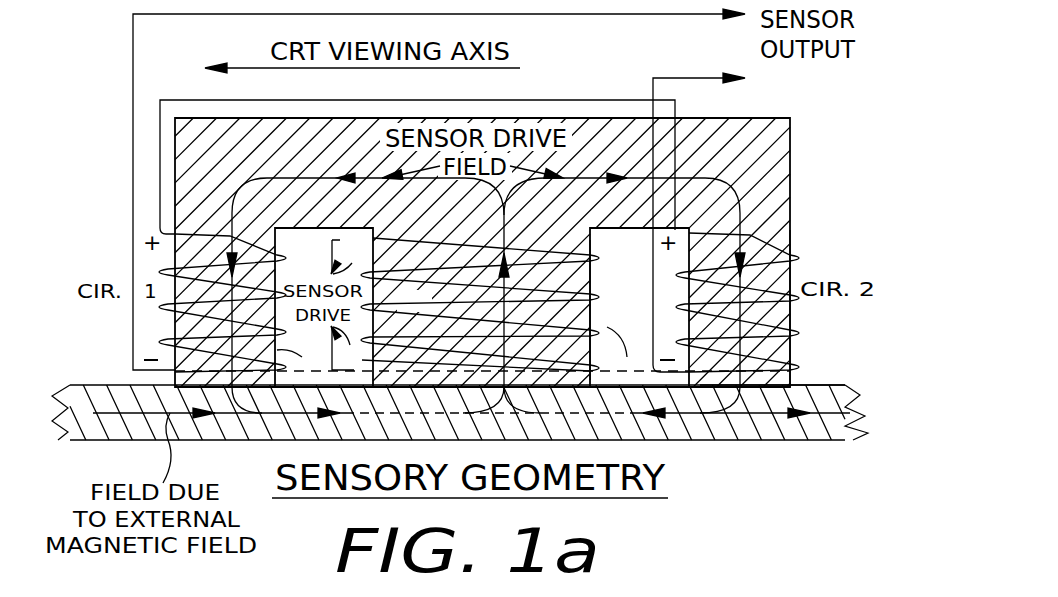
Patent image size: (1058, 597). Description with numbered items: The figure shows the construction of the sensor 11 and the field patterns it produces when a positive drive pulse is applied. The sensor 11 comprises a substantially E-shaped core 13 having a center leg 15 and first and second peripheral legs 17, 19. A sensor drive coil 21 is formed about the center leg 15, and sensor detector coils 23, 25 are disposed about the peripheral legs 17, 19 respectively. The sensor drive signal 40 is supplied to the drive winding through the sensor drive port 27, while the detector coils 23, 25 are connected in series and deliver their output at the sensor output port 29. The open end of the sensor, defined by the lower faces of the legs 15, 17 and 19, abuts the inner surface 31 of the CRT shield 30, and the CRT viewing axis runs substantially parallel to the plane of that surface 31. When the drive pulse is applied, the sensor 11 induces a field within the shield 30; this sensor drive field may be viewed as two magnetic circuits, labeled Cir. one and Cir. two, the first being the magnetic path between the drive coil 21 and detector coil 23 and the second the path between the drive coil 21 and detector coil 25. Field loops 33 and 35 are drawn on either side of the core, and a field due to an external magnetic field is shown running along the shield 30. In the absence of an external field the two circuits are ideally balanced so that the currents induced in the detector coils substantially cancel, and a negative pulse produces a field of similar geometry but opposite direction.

The sensor 11 is at (617, 49).
The core 13 is at (800, 115).
The center leg 15 is at (601, 308).
The first peripheral leg 17 is at (295, 369).
The second peripheral leg 19 is at (808, 351).
The sensor drive coil 21 is at (624, 356).
The sensor detector coil 23 is at (240, 302).
The sensor detector coil 25 is at (798, 252).
The sensor drive port 27 is at (349, 305).
The sensor output port 29 is at (740, 218).
The CRT shield 30 is at (858, 420).
The inner surface 31 is at (833, 387).
The sensor drive field loop 33 is at (245, 196).
The sensor drive field loop 35 is at (735, 202).
The sensor drive signal 40 is at (362, 292).